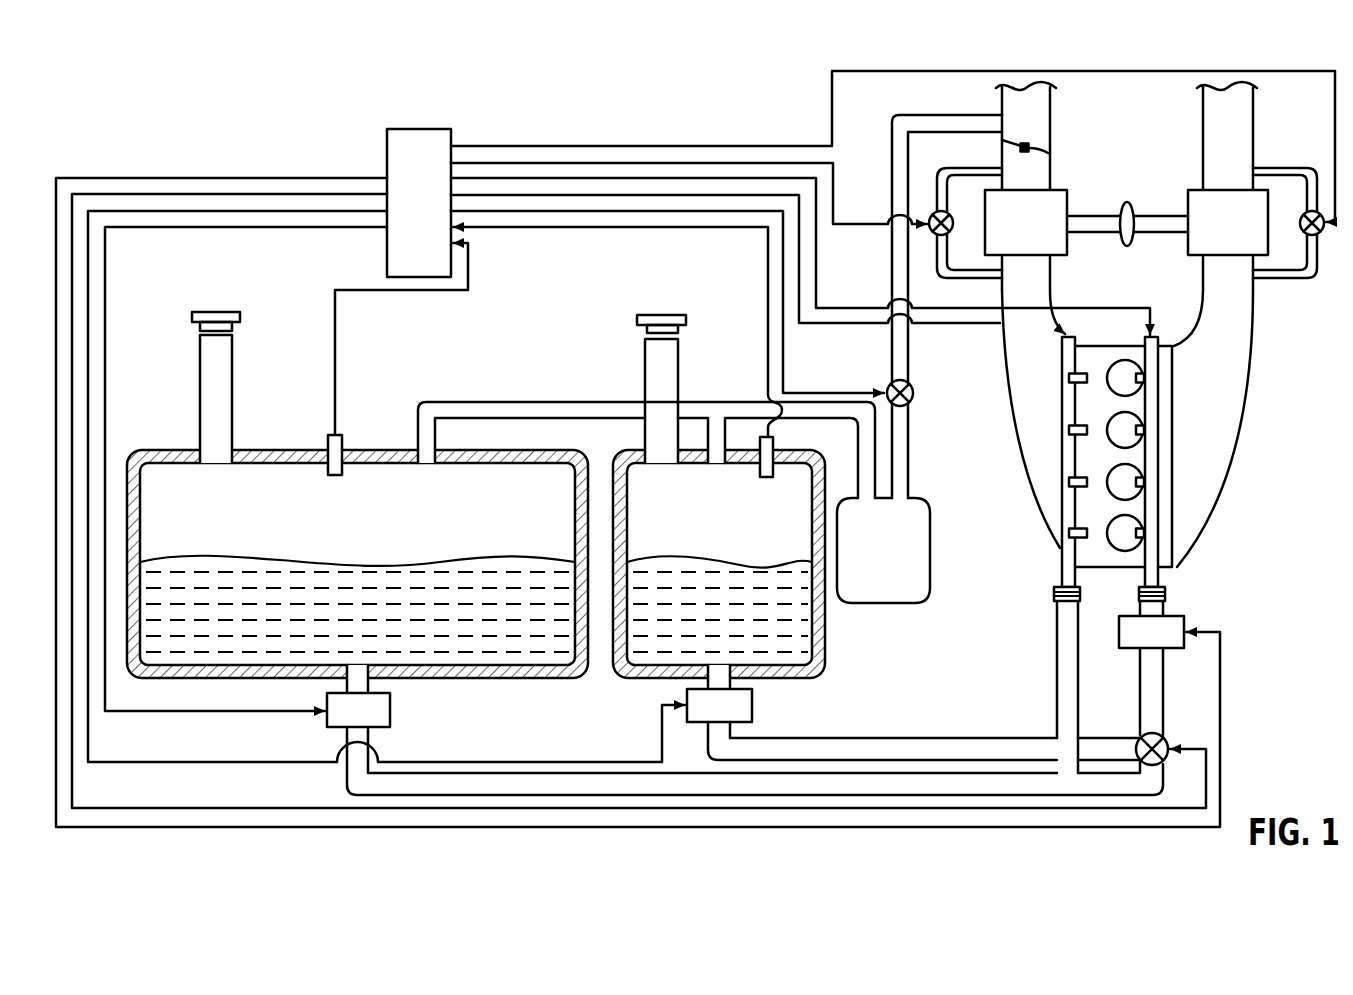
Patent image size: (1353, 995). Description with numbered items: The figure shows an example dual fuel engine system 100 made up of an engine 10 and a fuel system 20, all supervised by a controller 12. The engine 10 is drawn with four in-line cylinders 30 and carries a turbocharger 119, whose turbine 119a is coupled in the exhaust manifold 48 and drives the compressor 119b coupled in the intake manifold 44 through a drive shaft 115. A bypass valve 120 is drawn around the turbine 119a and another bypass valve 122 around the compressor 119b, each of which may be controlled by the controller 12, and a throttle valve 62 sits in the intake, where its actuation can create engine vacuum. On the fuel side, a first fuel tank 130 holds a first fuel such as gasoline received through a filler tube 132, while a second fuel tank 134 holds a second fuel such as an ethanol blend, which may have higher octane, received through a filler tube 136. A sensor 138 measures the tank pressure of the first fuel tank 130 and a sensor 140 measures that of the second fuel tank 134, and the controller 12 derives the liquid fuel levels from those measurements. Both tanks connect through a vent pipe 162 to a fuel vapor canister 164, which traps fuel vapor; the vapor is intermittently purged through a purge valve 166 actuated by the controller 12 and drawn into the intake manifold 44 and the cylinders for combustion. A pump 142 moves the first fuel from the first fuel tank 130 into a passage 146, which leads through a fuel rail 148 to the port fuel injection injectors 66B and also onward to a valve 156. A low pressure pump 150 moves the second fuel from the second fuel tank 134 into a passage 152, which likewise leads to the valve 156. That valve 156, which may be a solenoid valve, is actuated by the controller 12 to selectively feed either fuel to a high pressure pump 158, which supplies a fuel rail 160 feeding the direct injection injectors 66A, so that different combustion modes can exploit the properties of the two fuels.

The dual fuel engine system 100 is at (695, 441).
The controller 12 is at (430, 129).
The fuel system 20 is at (204, 280).
The engine 10 is at (1162, 428).
The cylinders 30 is at (1123, 382).
The intake manifold 44 is at (1042, 369).
The exhaust manifold 48 is at (1230, 369).
The throttle valve 62 is at (1017, 145).
The direct injection fuel injectors 66A is at (1144, 533).
The port fuel injection fuel injectors 66B is at (1068, 532).
The drive shaft 115 is at (1158, 235).
The turbocharger 119 is at (1140, 181).
The turbine 119a is at (1209, 235).
The compressor 119b is at (1007, 235).
The bypass valve 120 is at (1320, 238).
The bypass valve 122 is at (952, 229).
The first fuel tank 130 is at (247, 448).
The filler tube 132 is at (233, 355).
The second fuel tank 134 is at (630, 450).
The filler tube 136 is at (646, 384).
The sensor 138 is at (336, 434).
The sensor 140 is at (774, 443).
The pump 142 is at (392, 712).
The passage 146 is at (347, 777).
The fuel rail 148 is at (1054, 568).
The low pressure pump 150 is at (755, 706).
The passage 152 is at (893, 737).
The valve 156 is at (1165, 735).
The high pressure pump 158 is at (1173, 619).
The fuel rail 160 is at (1158, 405).
The vent pipe 162 is at (487, 402).
The fuel vapor canister 164 is at (932, 543).
The purge valve 166 is at (912, 398).